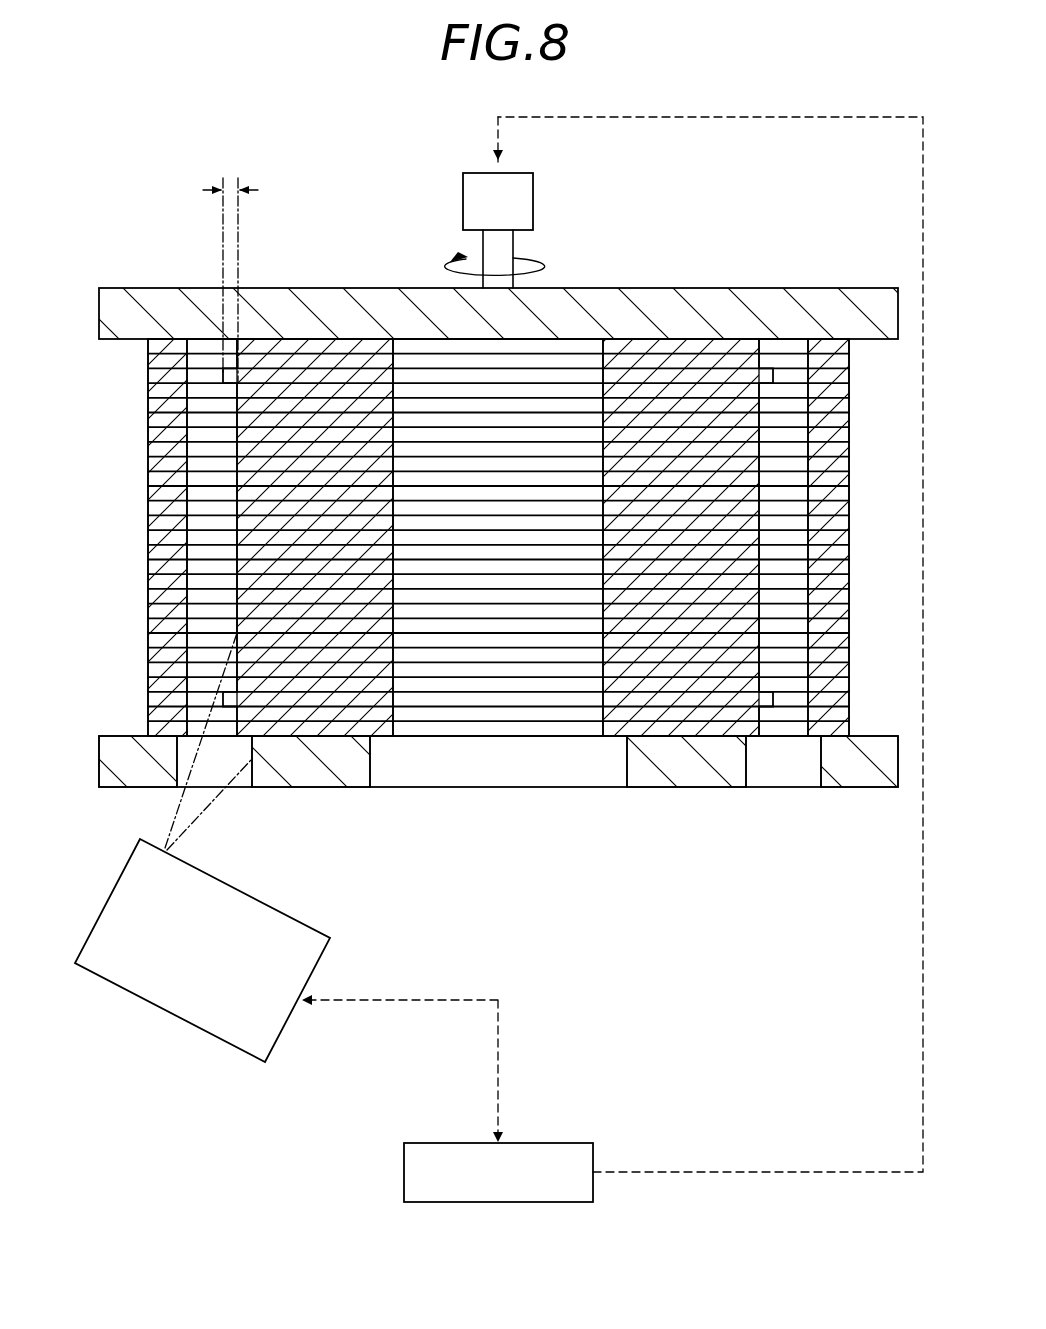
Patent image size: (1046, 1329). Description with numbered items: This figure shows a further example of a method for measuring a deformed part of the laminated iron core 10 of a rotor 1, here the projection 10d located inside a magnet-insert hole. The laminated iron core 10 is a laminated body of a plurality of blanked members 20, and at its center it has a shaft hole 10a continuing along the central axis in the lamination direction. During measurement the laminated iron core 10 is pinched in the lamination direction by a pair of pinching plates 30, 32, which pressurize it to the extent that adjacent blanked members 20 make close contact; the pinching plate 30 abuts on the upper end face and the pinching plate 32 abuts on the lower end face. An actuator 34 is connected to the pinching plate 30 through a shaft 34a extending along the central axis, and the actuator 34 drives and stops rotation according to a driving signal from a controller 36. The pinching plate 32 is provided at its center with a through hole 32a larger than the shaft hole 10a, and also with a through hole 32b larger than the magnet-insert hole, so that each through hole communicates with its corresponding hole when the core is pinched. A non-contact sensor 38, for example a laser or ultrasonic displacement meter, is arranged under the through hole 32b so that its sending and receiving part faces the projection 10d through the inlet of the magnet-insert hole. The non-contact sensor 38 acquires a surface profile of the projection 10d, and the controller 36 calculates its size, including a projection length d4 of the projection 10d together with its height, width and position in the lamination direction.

The rotor 1 is at (868, 497).
The laminated iron core 10 is at (283, 322).
The shaft hole 10a is at (583, 320).
The projection 10d is at (222, 372).
The blanked member 20 is at (700, 730).
The pinching plate 30 is at (872, 306).
The pinching plate 32 is at (866, 775).
The through hole 32a is at (627, 760).
The through hole 32b is at (246, 778).
The actuator 34 is at (535, 190).
The shaft 34a is at (483, 245).
The controller 36 is at (404, 1172).
The non-contact sensor 38 is at (263, 902).
The projection length d4 is at (230, 186).